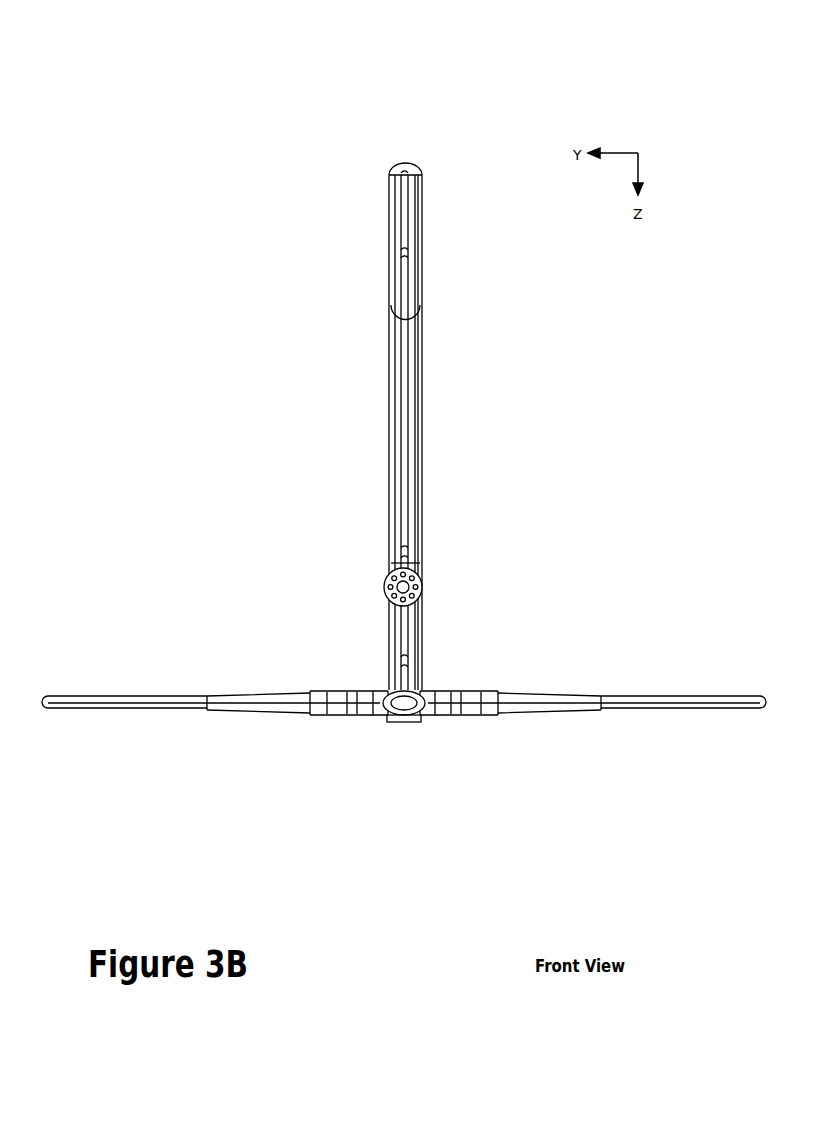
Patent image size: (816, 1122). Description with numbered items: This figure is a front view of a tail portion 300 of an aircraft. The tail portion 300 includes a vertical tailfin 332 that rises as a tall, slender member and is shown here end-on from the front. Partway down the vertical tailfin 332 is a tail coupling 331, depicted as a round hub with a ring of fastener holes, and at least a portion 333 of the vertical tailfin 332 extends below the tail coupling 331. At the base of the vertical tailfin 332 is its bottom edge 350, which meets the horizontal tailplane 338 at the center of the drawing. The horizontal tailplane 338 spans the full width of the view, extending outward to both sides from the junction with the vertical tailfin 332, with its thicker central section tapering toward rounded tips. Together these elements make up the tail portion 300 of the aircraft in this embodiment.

The tail portion 300 is at (340, 92).
The vertical tailfin 332 is at (396, 166).
The tail coupling 331 is at (385, 585).
The portion of the vertical tailfin 333 is at (381, 639).
The horizontal tailplane 338 is at (577, 712).
The bottom edge of the vertical tailfin 350 is at (400, 722).